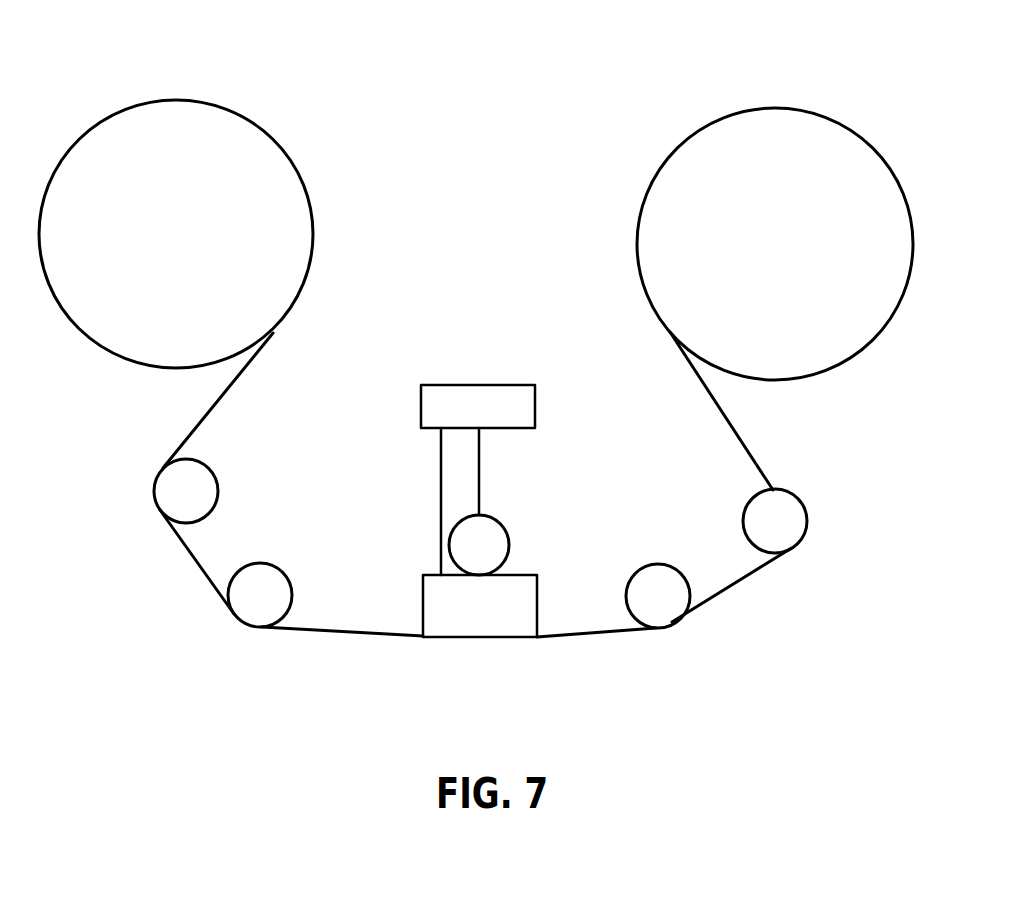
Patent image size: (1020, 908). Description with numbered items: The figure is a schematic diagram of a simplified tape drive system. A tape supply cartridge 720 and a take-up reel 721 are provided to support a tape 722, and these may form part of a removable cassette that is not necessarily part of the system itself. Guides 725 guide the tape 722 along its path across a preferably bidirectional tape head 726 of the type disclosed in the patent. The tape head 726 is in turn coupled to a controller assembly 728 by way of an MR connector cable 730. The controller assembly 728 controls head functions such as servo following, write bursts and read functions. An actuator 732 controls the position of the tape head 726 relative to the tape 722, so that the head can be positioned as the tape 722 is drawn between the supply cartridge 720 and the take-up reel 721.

The tape supply cartridge 720 is at (303, 177).
The take-up reel 721 is at (773, 108).
The tape 722 is at (342, 634).
The guides 725 is at (220, 482).
The tape head 726 is at (540, 603).
The controller assembly 728 is at (477, 385).
The MR connector cable 730 is at (440, 542).
The actuator 732 is at (502, 522).